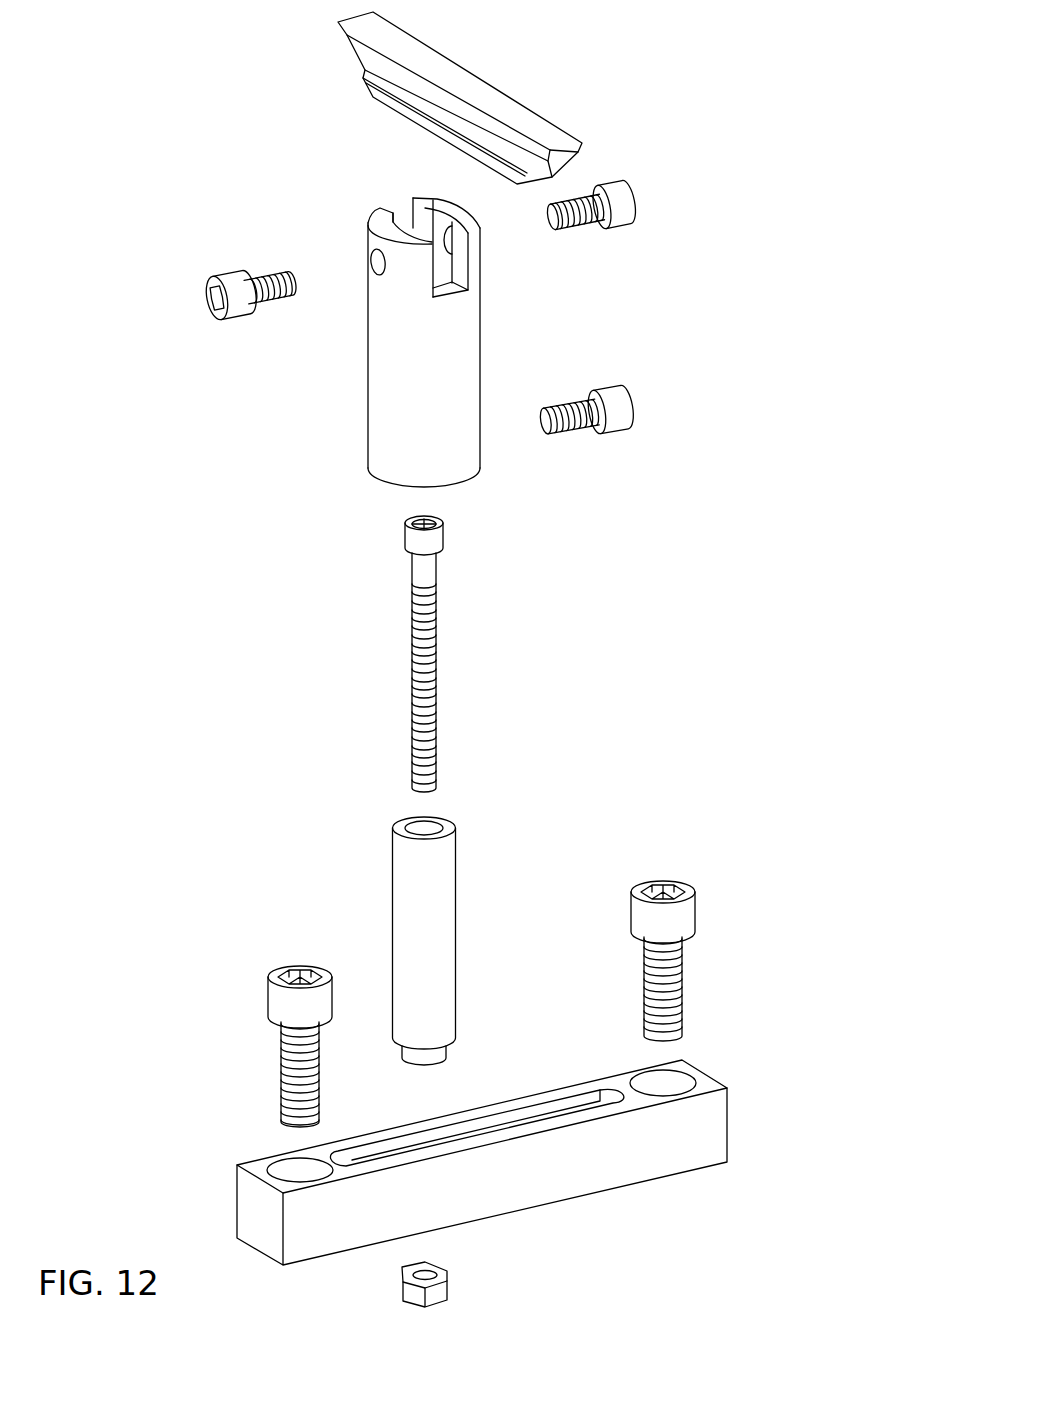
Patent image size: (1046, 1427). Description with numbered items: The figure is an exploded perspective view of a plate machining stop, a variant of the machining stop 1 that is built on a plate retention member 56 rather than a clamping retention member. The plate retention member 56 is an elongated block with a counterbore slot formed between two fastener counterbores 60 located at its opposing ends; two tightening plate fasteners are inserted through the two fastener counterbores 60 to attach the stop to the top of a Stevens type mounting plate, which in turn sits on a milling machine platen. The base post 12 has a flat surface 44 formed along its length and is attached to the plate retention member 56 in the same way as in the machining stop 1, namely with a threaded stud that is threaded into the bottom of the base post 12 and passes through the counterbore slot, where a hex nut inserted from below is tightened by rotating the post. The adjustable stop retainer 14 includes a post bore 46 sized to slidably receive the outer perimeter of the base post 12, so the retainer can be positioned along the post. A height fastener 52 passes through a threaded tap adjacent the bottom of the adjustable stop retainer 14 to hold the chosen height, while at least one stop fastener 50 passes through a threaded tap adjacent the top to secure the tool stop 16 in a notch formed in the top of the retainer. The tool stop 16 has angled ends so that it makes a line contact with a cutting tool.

The machining stop 1 is at (838, 135).
The base post 12 is at (393, 887).
The adjustable stop retainer 14 is at (480, 343).
The tool stop 16 is at (541, 132).
The flat surface 44 is at (452, 818).
The post bore 46 is at (390, 225).
The stop fastener 50 is at (640, 200).
The height fastener 52 is at (632, 397).
The plate retention member 56 is at (517, 1090).
The fastener counterbores 60 is at (268, 1160).